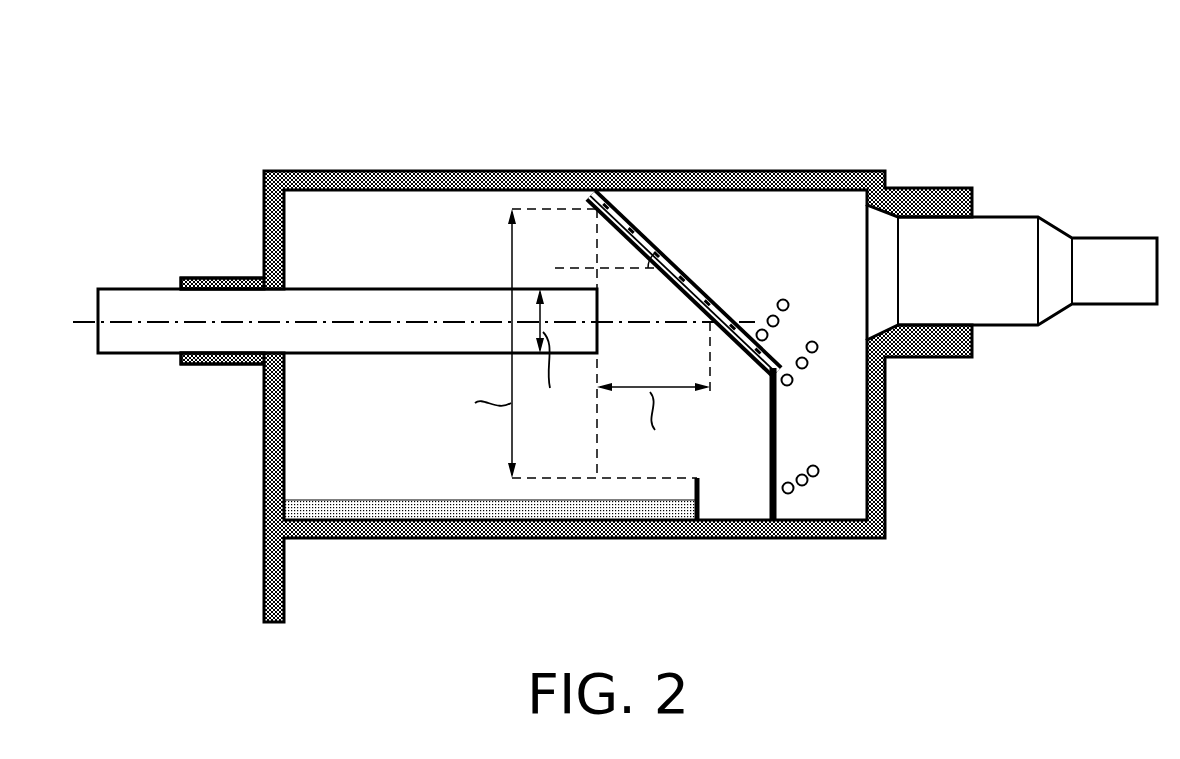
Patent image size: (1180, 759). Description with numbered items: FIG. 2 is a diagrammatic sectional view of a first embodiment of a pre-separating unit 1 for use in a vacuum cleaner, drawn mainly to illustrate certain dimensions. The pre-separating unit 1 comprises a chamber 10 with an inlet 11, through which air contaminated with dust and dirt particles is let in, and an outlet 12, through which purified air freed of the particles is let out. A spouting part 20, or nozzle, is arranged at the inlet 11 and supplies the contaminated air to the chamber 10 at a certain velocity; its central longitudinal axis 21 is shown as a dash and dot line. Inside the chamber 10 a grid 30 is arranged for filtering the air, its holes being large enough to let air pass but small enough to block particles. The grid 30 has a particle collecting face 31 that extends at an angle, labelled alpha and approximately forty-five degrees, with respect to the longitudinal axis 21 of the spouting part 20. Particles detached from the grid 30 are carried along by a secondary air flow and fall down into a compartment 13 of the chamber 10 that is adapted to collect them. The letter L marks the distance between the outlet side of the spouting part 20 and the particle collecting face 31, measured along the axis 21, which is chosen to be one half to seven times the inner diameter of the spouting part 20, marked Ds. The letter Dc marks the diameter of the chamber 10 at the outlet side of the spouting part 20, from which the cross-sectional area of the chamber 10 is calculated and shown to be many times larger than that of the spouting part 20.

The pre-separating unit 1 is at (1036, 113).
The chamber 10 is at (330, 171).
The inlet 11 is at (224, 278).
The outlet 12 is at (1001, 321).
The compartment 13 is at (385, 504).
The spouting part 20 is at (437, 298).
The central longitudinal axis of the spouting part 21 is at (370, 320).
The grid 30 is at (640, 228).
The particle collecting face 31 is at (730, 352).